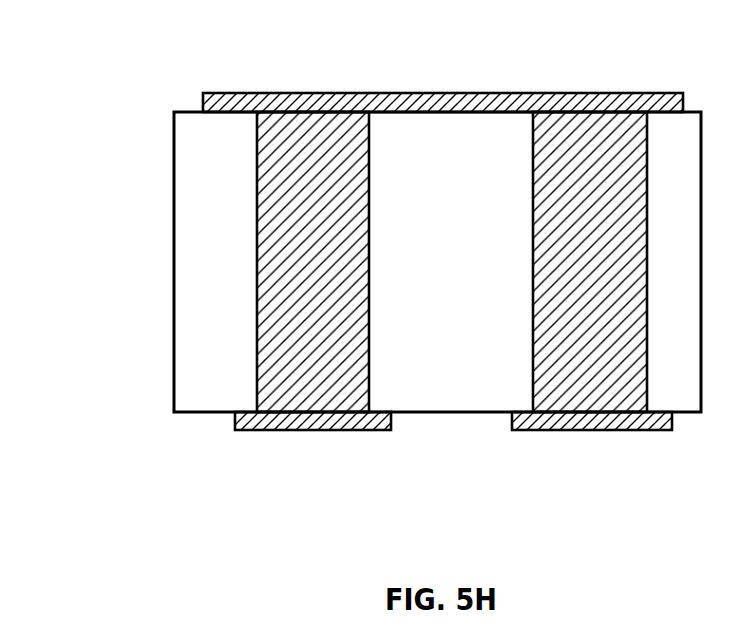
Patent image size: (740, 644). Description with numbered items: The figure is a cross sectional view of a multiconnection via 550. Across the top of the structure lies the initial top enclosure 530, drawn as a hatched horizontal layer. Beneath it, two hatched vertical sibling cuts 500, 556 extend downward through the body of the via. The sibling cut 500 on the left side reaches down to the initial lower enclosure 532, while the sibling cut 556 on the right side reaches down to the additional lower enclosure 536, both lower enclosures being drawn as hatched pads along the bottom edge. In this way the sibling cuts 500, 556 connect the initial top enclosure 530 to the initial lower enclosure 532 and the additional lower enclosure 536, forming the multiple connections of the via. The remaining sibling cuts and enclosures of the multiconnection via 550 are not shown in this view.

The multiconnection via 550 is at (113, 98).
The initial top enclosure 530 is at (613, 103).
The sibling cut 500 is at (367, 247).
The sibling cut 556 is at (647, 255).
The initial lower enclosure 532 is at (377, 430).
The additional lower enclosure 536 is at (577, 430).